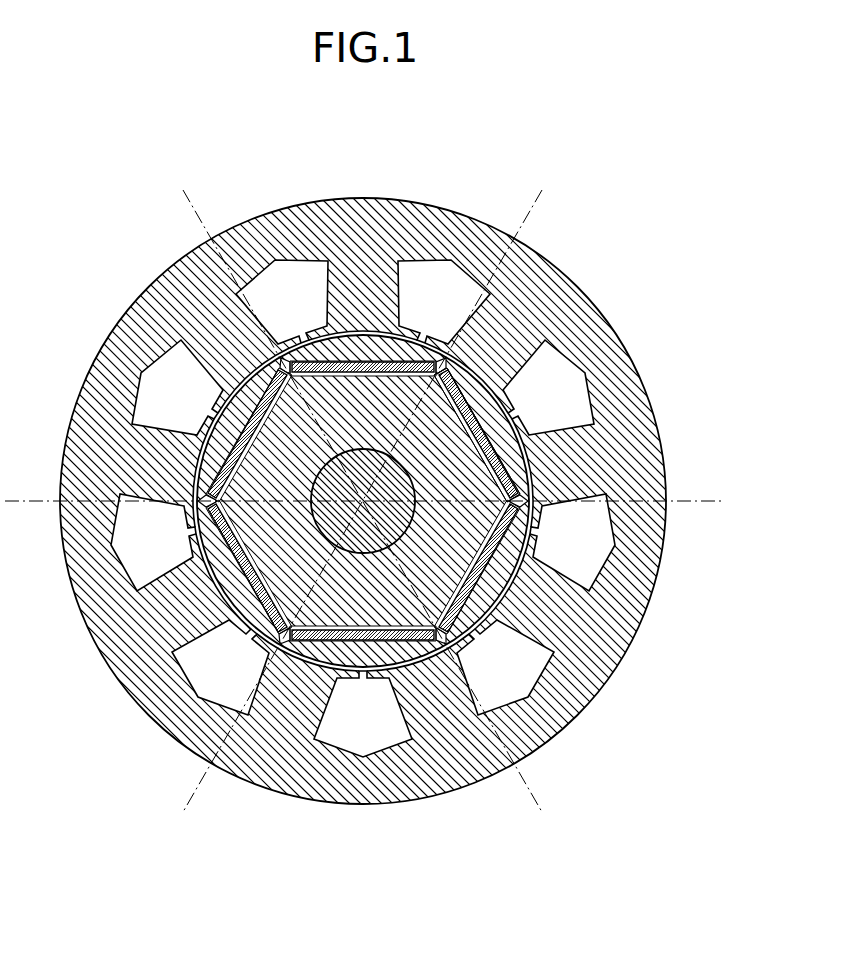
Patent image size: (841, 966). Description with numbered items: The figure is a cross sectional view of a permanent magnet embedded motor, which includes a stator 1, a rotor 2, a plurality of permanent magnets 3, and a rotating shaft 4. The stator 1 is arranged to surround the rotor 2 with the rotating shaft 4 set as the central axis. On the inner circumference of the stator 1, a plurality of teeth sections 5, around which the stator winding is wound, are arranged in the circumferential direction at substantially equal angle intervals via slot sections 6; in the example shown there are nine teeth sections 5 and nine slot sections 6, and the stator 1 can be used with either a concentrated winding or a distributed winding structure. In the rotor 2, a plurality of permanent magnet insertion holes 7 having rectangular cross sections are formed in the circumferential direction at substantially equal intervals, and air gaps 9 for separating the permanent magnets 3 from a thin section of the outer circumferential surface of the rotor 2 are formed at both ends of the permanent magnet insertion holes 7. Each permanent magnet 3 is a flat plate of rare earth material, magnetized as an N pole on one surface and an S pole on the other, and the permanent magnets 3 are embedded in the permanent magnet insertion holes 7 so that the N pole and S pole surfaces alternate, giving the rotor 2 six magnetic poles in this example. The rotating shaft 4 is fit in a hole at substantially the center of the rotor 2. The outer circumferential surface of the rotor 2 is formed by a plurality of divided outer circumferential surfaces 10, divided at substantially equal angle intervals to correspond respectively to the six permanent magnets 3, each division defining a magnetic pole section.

The stator 1 is at (352, 198).
The rotor 2 is at (455, 380).
The permanent magnet 3 is at (398, 390).
The rotating shaft 4 is at (408, 476).
The teeth section 5 is at (370, 278).
The slot section 6 is at (445, 315).
The permanent magnet insertion hole 7 is at (375, 363).
The air gap 9 is at (290, 357).
The divided outer circumferential surface 10 is at (445, 408).